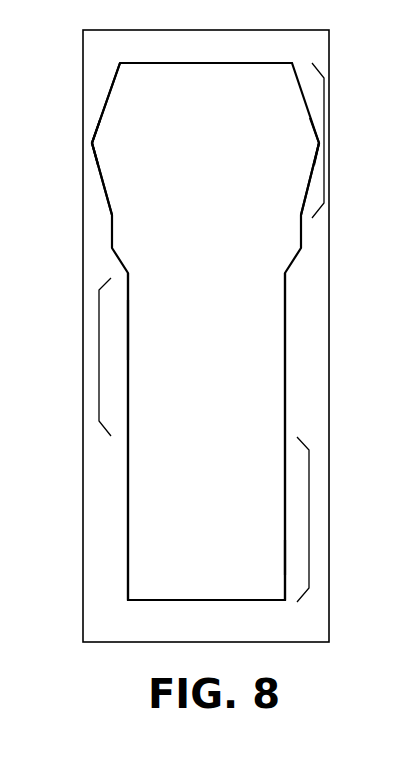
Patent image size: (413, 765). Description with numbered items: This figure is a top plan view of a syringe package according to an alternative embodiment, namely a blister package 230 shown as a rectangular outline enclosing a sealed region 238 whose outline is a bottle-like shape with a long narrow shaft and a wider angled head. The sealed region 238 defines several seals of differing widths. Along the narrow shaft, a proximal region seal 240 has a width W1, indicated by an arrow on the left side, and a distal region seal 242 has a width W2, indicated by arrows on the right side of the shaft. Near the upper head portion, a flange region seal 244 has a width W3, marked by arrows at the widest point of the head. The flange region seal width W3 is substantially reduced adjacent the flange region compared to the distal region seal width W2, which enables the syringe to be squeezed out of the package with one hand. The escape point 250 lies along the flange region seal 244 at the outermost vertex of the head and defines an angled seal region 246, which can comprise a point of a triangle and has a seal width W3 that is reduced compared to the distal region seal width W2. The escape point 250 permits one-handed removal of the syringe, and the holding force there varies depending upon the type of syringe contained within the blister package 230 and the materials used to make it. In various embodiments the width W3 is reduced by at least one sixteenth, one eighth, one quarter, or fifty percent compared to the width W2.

The blister package 230 is at (58, 286).
The sealed region 238 is at (136, 601).
The proximal region seal 240 is at (99, 362).
The distal region seal 242 is at (309, 512).
The flange region seal 244 is at (326, 124).
The angled seal region 246 is at (104, 105).
The escape point 250 is at (92, 143).
The proximal region seal width W1 is at (134, 329).
The distal region seal width W2 is at (258, 557).
The flange region seal width W3 is at (357, 143).